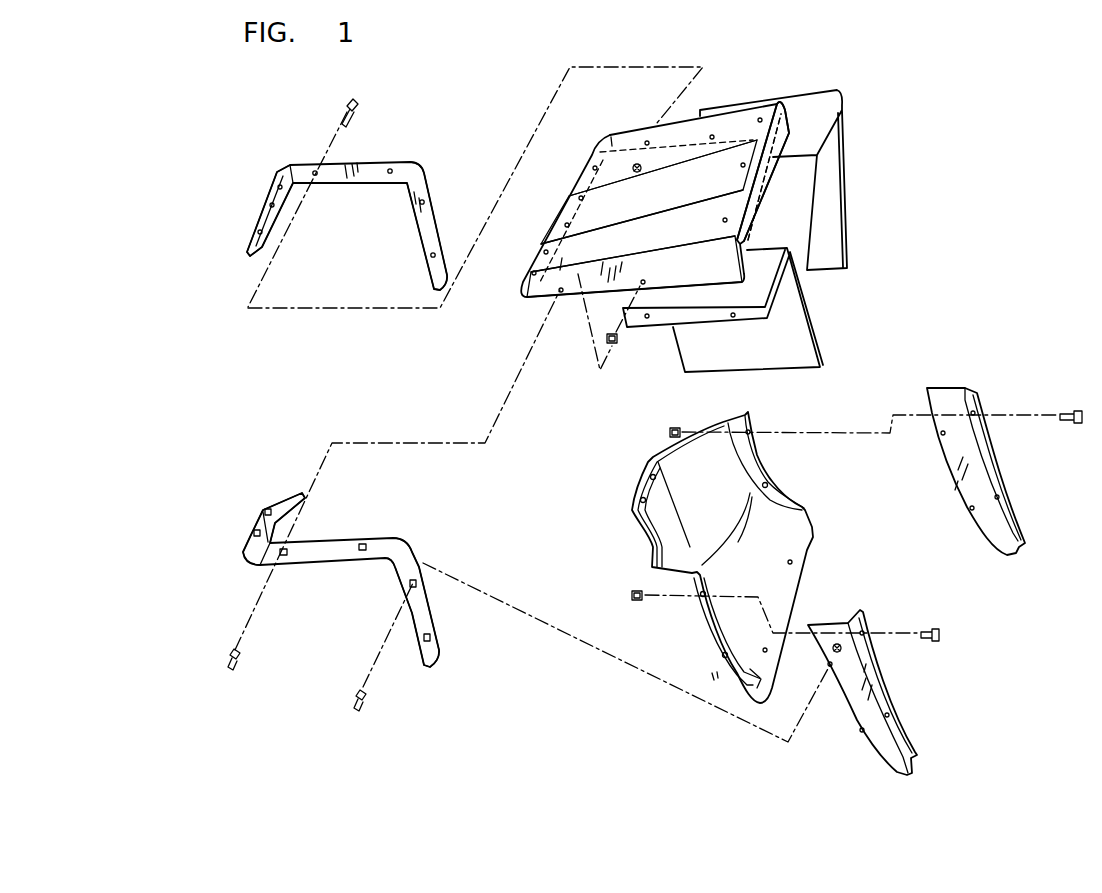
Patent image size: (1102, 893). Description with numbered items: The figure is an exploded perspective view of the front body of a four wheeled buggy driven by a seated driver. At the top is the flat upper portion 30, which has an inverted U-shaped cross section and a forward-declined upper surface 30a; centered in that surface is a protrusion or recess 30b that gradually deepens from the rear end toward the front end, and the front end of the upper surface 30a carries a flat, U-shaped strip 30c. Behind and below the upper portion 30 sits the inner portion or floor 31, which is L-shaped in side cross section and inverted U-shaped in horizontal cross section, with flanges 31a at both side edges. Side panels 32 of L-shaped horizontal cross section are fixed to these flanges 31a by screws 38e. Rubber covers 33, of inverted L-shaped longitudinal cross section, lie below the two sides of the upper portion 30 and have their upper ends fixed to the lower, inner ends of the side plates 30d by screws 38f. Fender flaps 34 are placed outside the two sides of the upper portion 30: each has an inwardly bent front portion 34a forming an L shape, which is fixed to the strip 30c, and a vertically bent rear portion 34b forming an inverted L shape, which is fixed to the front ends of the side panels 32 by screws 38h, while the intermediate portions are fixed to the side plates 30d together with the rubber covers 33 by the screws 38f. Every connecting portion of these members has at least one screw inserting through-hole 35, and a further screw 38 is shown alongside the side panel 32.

The upper portion 30 is at (742, 128).
The upper surface 30a is at (672, 128).
The protrusion or recess 30b is at (610, 212).
The U-shaped strip 30c is at (522, 282).
The side plates 30d is at (791, 127).
The inner portion or floor 31 is at (633, 530).
The flanges 31a is at (760, 467).
The side panels 32 is at (986, 403).
The rubber covers 33 is at (844, 240).
The fender flaps 34 is at (441, 217).
The front portion 34a is at (277, 193).
The rear portion 34b is at (427, 237).
The screw inserting through-holes 35 is at (390, 169).
The bolt 38 is at (1067, 410).
The screws 38e is at (926, 630).
The screws 38f is at (357, 100).
The screws 38h is at (356, 696).